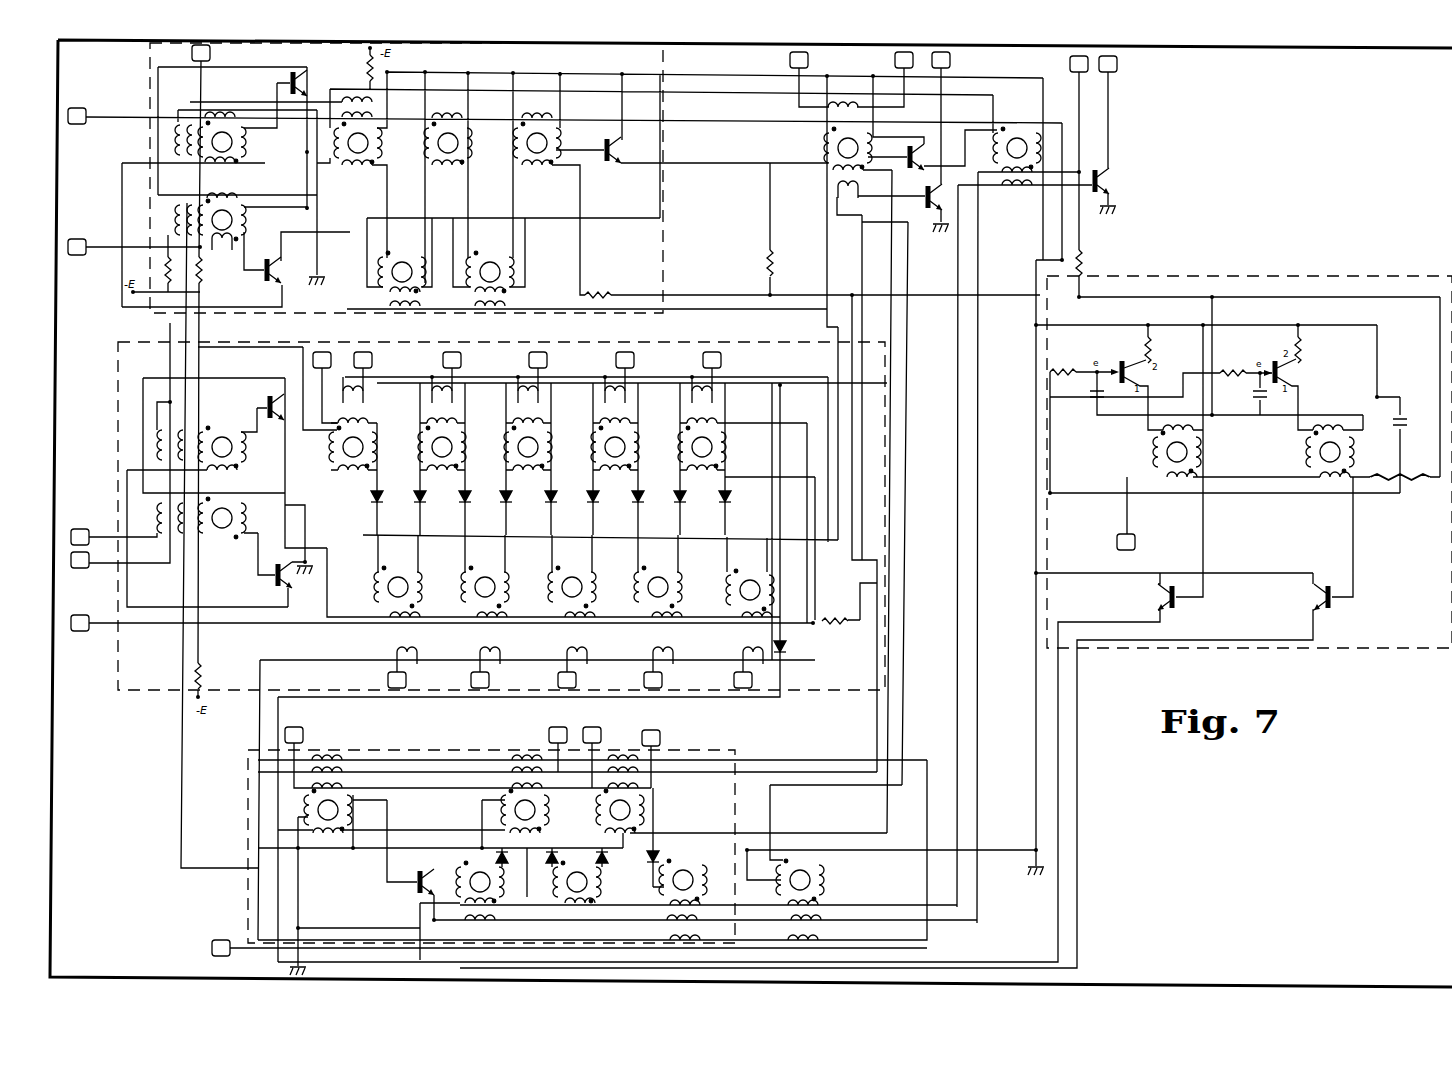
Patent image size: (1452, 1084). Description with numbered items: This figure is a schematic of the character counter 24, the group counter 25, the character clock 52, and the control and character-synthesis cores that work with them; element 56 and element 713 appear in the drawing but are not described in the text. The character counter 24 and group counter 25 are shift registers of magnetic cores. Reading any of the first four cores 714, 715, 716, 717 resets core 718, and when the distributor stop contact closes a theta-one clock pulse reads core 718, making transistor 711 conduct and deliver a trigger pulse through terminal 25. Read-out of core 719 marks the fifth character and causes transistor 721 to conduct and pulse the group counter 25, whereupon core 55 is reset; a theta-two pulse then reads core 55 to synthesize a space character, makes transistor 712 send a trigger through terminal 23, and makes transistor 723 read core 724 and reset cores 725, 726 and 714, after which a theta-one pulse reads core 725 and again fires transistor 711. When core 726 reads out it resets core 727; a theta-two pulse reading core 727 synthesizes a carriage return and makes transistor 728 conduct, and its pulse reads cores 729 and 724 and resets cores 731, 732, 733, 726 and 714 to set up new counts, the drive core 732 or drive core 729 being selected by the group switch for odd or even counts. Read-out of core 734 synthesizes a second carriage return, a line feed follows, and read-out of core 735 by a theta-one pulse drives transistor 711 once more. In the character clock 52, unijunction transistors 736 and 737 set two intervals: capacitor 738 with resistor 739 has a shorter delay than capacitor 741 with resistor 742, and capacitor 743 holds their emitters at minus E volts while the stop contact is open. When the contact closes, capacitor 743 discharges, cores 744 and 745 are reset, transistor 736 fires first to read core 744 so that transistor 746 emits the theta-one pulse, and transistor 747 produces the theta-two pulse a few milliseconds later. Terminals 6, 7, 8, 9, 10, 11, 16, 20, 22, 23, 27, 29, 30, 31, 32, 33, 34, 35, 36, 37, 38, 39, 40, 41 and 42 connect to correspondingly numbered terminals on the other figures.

The character counter 24 is at (663, 60).
The group counter 25 is at (756, 342).
The character clock 52 is at (1302, 272).
The third circuit section 56 is at (247, 768).
The core 55 is at (836, 148).
The transistor 711 is at (1102, 176).
The transistor 712 is at (937, 190).
The transistor 713 is at (205, 272).
The core 714 is at (367, 146).
The core 715 is at (403, 262).
The core 716 is at (455, 146).
The core 717 is at (493, 262).
The core 718 is at (828, 872).
The core 719 is at (545, 140).
The transistor 721 is at (603, 150).
The transistor 723 is at (927, 150).
The core 724 is at (228, 212).
The core 725 is at (1018, 130).
The core 726 is at (233, 142).
The core 727 is at (308, 812).
The transistor 728 is at (412, 885).
The drive core 729 is at (230, 509).
The core 731 is at (472, 874).
The drive core 732 is at (228, 436).
The core 733 is at (347, 453).
The core 734 is at (505, 811).
The core 735 is at (720, 866).
The unijunction transistor 736 is at (1111, 363).
The unijunction transistor 737 is at (1283, 370).
The capacitor 738 is at (1095, 402).
The resistor 739 is at (1067, 366).
The capacitor 741 is at (1268, 396).
The resistor 742 is at (1238, 368).
The capacitor 743 is at (1403, 412).
The core 744 is at (1166, 452).
The core 745 is at (1318, 452).
The transistor 746 is at (1178, 609).
The transistor 747 is at (1334, 609).
The terminal 6 is at (294, 735).
The terminal 7 is at (558, 735).
The terminal 8 is at (592, 735).
The terminal 9 is at (651, 738).
The terminal 10 is at (799, 60).
The terminal 11 is at (904, 60).
The terminal 16 is at (201, 53).
The terminal 20 is at (77, 116).
The terminal 22 is at (77, 247).
The terminal 23 is at (941, 60).
The terminal 27 is at (221, 948).
The terminal 29 is at (80, 537).
The terminal 30 is at (80, 560).
The terminal 31 is at (363, 360).
The terminal 32 is at (452, 360).
The terminal 33 is at (538, 360).
The terminal 34 is at (625, 360).
The terminal 35 is at (712, 360).
The terminal 36 is at (743, 680).
The terminal 37 is at (653, 680).
The terminal 38 is at (567, 680).
The terminal 39 is at (480, 680).
The terminal 40 is at (397, 680).
The terminal 41 is at (322, 360).
The terminal 42 is at (603, 582).